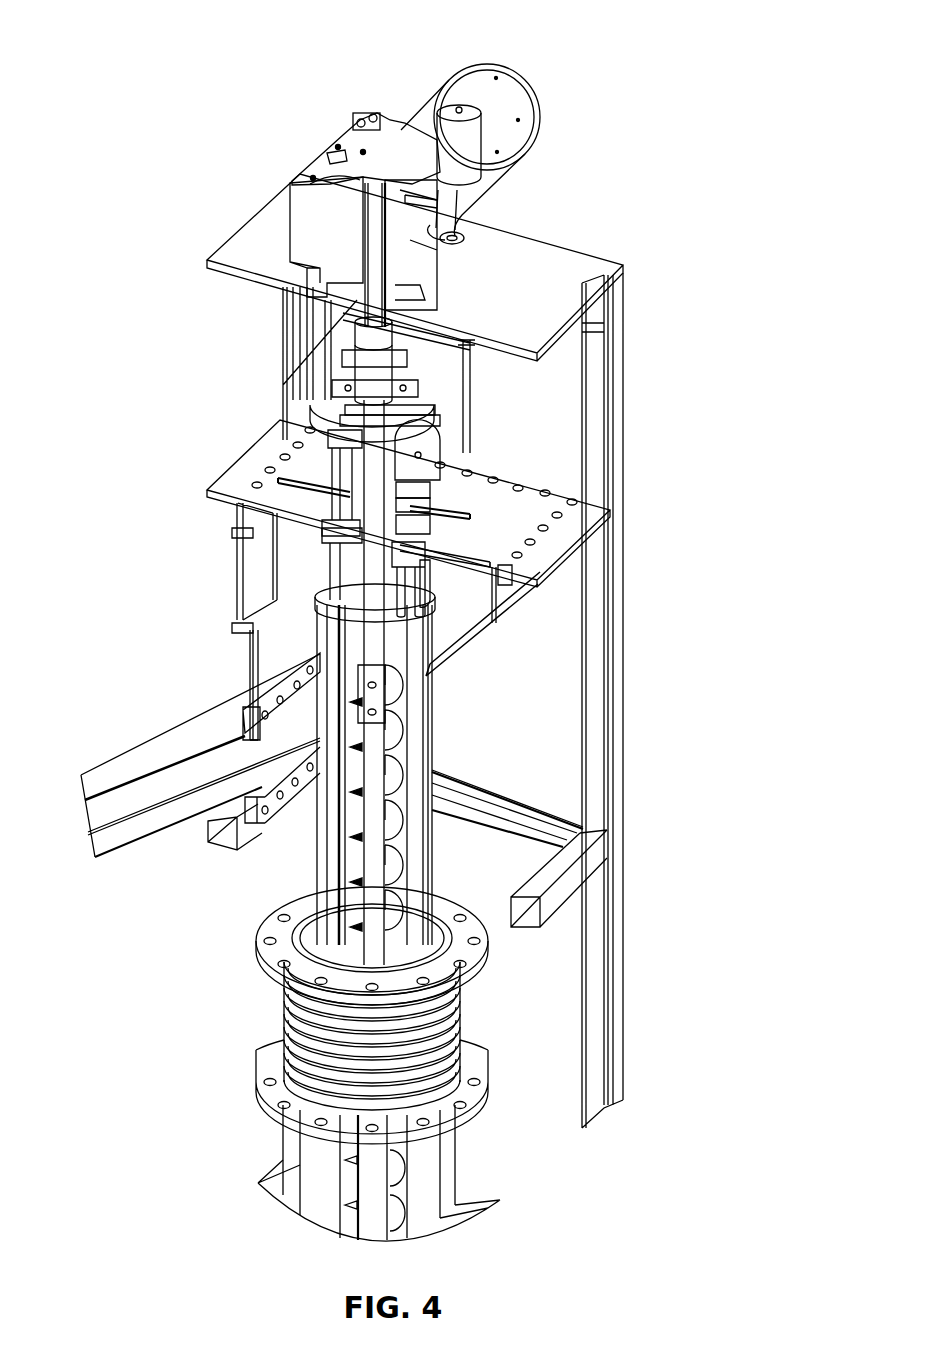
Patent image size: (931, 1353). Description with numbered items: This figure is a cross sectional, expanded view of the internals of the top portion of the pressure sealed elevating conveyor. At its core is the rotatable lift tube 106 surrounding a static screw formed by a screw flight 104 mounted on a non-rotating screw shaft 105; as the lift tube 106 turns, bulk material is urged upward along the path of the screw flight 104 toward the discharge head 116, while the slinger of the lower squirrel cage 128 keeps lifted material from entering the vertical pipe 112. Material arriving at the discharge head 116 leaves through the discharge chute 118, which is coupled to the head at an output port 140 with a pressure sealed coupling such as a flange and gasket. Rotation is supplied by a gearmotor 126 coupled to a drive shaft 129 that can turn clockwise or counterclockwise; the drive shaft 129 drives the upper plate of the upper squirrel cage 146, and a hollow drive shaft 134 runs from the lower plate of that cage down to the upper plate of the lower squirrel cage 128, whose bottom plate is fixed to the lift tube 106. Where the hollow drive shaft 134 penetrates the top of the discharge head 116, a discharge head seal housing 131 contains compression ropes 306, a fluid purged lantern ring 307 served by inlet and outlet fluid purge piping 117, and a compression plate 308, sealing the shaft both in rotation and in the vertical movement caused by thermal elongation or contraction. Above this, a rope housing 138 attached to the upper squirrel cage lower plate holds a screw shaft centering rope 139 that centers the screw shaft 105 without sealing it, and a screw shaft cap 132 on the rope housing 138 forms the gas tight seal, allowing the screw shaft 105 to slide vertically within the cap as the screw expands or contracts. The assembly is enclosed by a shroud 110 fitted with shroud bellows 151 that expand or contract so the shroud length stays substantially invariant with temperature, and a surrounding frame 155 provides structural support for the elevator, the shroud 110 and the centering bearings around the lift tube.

The screw flight 104 is at (401, 832).
The screw shaft 105 is at (373, 473).
The rotatable lift tube 106 is at (414, 808).
The shroud 110 is at (457, 1175).
The vertical pipe 112 is at (441, 757).
The discharge head 116 is at (482, 642).
The inlet and outlet fluid purge piping 117 is at (323, 512).
The discharge chute 118 is at (130, 748).
The gearmotor 126 is at (497, 152).
The lower squirrel cage 128 is at (437, 587).
The drive shaft 129 is at (383, 300).
The discharge head seal housing 131 is at (233, 532).
The screw shaft cap 132 is at (375, 347).
The hollow drive shaft 134 is at (342, 438).
The rope housing 138 is at (428, 426).
The screw shaft centering rope 139 is at (401, 418).
The output port 140 is at (243, 705).
The upper squirrel cage 146 is at (479, 373).
The shroud bellows 151 is at (465, 1018).
The frame 155 is at (625, 965).
The compression ropes 306 is at (413, 492).
The fluid purged lantern ring 307 is at (412, 505).
The compression plate 308 is at (433, 462).